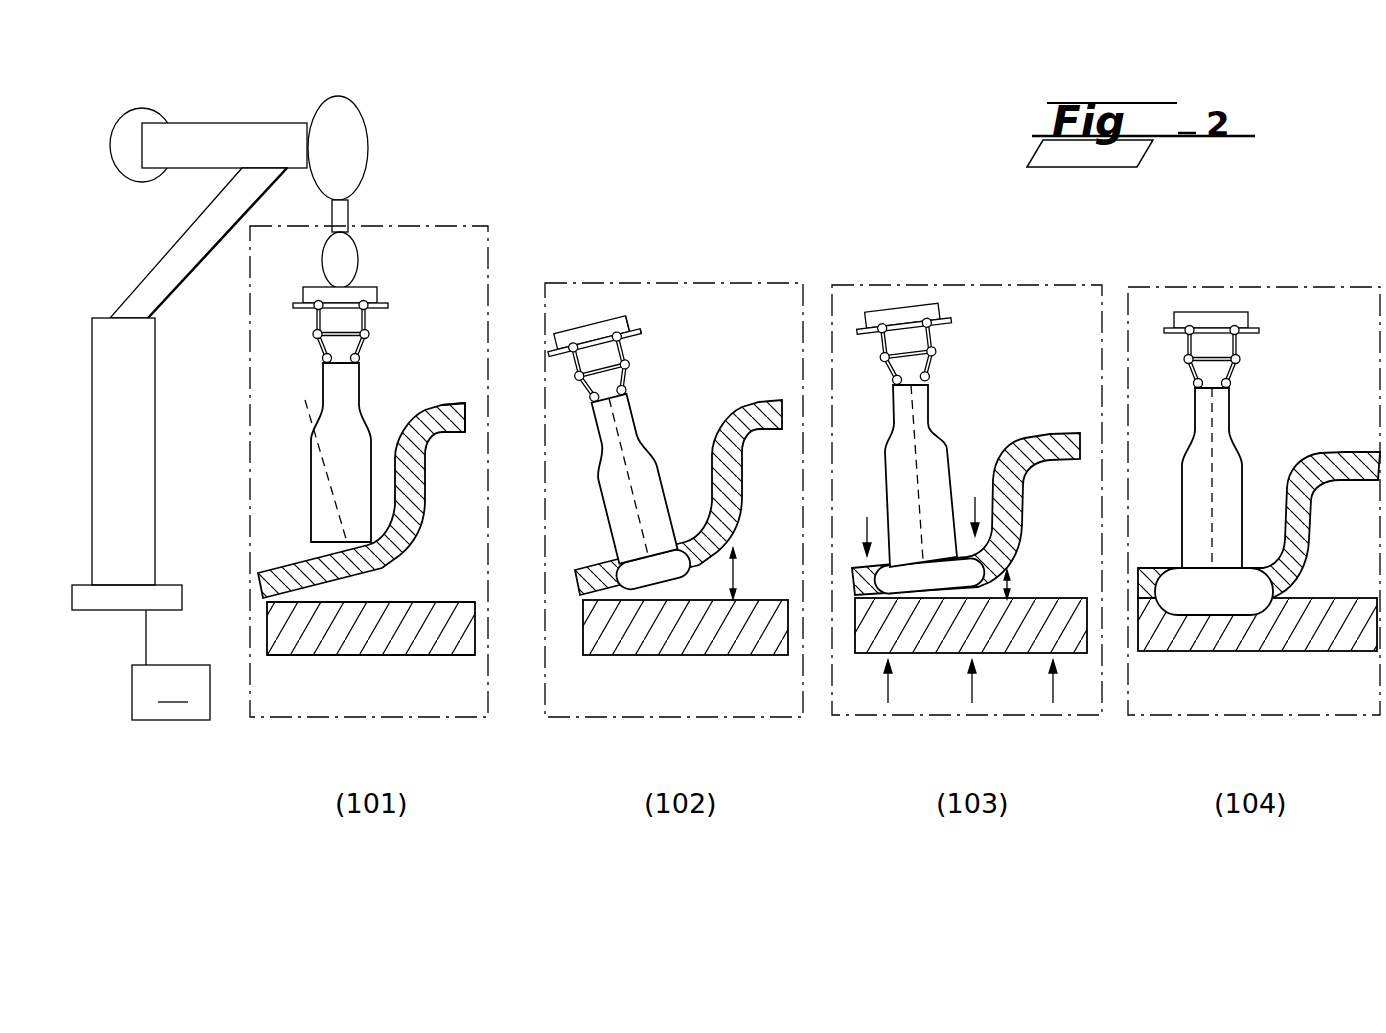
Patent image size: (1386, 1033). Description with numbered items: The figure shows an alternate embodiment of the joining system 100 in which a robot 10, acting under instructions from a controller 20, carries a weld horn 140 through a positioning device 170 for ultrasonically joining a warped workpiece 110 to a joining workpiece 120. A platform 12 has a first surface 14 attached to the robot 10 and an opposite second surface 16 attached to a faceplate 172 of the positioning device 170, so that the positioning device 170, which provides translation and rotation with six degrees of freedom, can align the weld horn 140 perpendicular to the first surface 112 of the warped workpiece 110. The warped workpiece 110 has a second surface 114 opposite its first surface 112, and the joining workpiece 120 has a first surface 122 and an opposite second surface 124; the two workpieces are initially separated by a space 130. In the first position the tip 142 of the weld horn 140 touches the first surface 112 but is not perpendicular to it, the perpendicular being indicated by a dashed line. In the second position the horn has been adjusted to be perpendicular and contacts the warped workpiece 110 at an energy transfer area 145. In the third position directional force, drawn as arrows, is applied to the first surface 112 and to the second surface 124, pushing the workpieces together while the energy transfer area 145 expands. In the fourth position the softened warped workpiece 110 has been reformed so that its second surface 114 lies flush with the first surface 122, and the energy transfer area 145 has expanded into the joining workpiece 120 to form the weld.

The robot 10 is at (124, 266).
The platform 12 is at (362, 287).
The first surface of the platform 14 is at (622, 320).
The second surface of the platform 16 is at (633, 330).
The controller 20 is at (171, 692).
The joining system 100 is at (488, 267).
The warped workpiece 110 is at (263, 598).
The first surface of the warped workpiece 112 is at (437, 406).
The second surface of the warped workpiece 114 is at (447, 443).
The joining workpiece 120 is at (267, 627).
The first surface of the joining workpiece 122 is at (430, 603).
The second surface of the joining workpiece 124 is at (430, 657).
The space 130 is at (737, 570).
The weld horn 140 is at (310, 467).
The tip 142 is at (323, 548).
The energy transfer area 145 is at (650, 577).
The positioning device 170 is at (395, 363).
The faceplate 172 is at (387, 305).